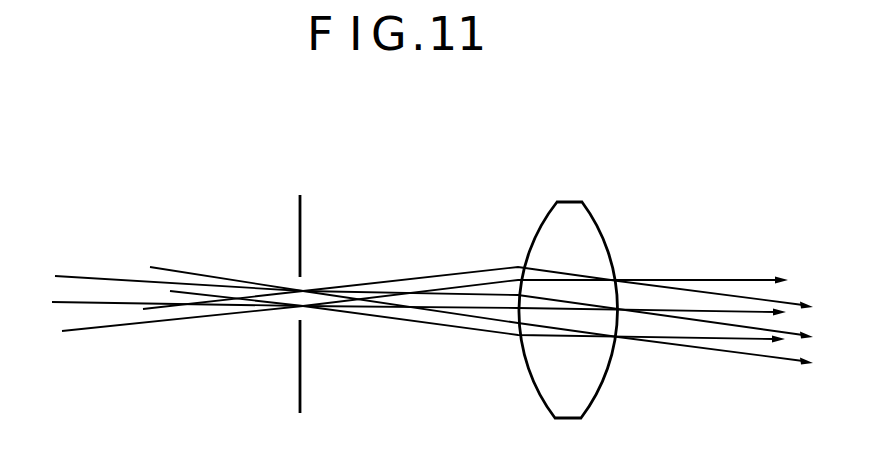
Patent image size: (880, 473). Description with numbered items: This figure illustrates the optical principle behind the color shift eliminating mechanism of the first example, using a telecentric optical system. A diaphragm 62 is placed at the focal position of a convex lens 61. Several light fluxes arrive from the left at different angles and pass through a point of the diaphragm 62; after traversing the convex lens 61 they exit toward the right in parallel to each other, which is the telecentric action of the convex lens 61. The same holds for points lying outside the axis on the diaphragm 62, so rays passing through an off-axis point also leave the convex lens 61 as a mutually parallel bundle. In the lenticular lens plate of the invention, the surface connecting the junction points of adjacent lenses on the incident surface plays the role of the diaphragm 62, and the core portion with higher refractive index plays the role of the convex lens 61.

The convex lens 61 is at (607, 232).
The diaphragm 62 is at (301, 220).